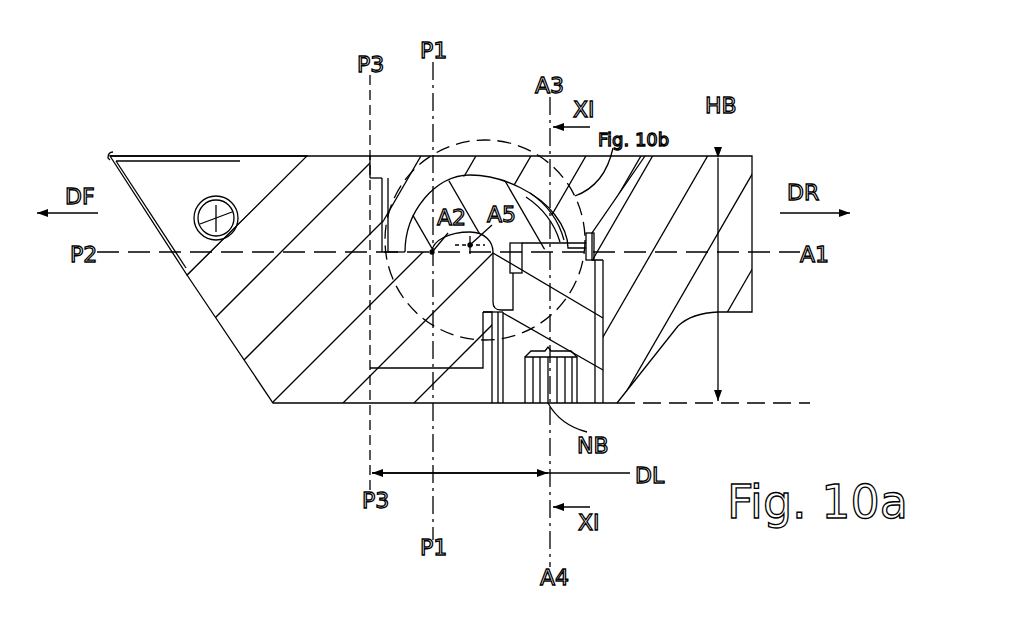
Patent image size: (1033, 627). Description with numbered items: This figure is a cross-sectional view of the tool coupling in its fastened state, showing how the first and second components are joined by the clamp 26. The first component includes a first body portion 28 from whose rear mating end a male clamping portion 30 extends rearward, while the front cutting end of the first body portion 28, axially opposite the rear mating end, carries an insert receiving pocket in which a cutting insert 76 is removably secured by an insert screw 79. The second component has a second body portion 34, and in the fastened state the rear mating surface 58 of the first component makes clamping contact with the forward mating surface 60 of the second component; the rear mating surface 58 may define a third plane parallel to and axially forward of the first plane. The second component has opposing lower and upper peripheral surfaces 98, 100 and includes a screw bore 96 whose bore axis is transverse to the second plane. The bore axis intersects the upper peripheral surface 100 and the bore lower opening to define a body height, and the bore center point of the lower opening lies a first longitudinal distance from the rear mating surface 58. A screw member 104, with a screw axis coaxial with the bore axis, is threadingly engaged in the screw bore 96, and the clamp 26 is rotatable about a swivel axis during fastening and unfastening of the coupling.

The upper peripheral surface 100 is at (692, 154).
The cutting insert 76 is at (165, 151).
The insert screw 79 is at (216, 218).
The first body portion 28 is at (319, 345).
The male clamping portion 30 is at (475, 323).
The clamp 26 is at (486, 205).
The second body portion 34 is at (648, 313).
The forward mating surface 60 is at (370, 373).
The rear mating surface 58 is at (372, 382).
The lower peripheral surface 98 is at (517, 366).
The screw member 104 is at (517, 405).
The screw bore 96 is at (589, 366).